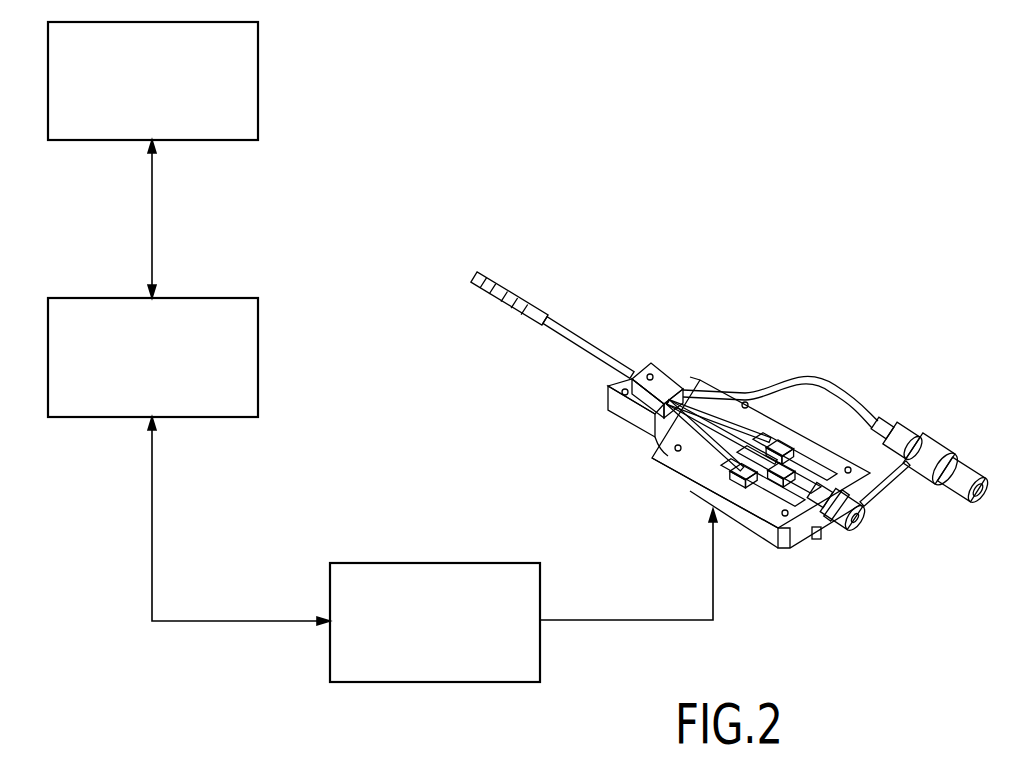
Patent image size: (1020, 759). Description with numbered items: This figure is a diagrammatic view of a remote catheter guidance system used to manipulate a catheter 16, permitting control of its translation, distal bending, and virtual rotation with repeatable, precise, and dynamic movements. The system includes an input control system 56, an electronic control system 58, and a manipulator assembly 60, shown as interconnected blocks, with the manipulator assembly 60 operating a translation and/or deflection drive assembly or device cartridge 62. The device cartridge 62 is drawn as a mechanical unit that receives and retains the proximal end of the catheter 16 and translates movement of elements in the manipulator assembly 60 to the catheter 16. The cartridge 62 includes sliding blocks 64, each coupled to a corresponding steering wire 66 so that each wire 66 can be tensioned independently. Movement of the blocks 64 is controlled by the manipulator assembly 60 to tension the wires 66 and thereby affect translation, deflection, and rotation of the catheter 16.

The catheter 16 is at (560, 330).
The input control system 56 is at (258, 61).
The electronic control system 58 is at (258, 312).
The manipulator assembly 60 is at (427, 563).
The device cartridge 62 is at (743, 293).
The sliding blocks 64 is at (745, 497).
The steering wire 66 is at (697, 453).